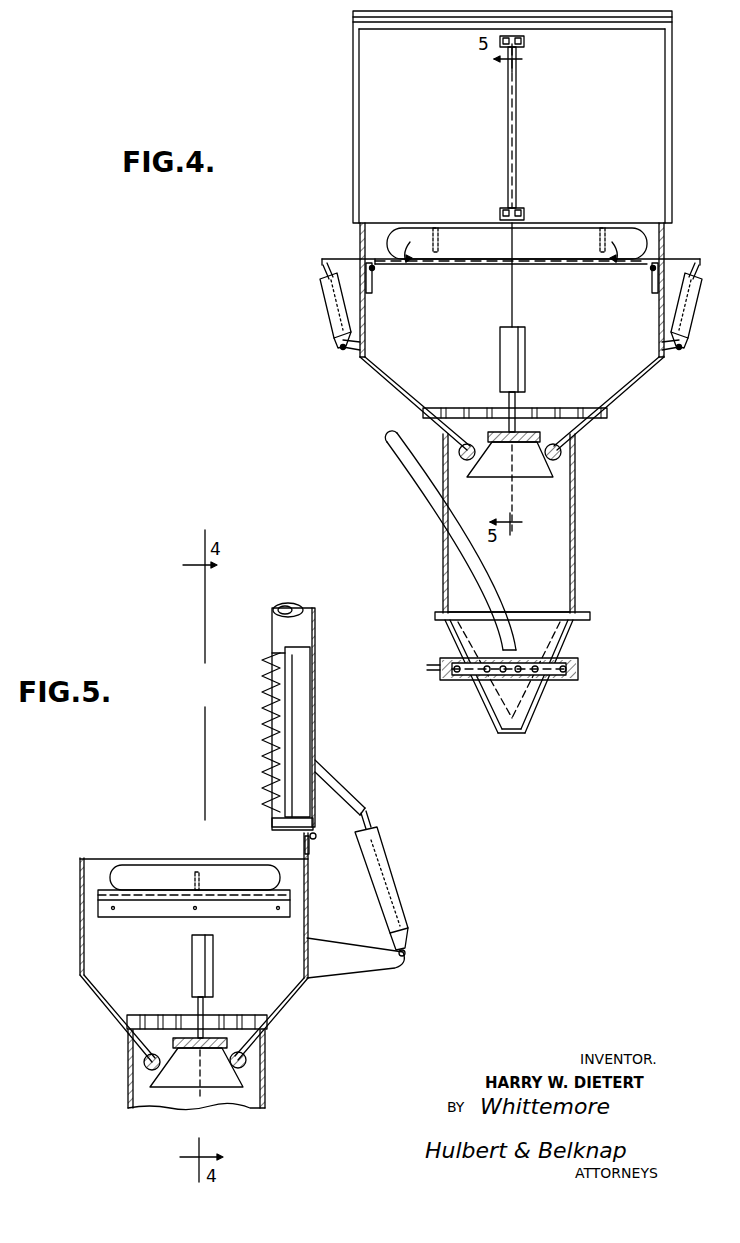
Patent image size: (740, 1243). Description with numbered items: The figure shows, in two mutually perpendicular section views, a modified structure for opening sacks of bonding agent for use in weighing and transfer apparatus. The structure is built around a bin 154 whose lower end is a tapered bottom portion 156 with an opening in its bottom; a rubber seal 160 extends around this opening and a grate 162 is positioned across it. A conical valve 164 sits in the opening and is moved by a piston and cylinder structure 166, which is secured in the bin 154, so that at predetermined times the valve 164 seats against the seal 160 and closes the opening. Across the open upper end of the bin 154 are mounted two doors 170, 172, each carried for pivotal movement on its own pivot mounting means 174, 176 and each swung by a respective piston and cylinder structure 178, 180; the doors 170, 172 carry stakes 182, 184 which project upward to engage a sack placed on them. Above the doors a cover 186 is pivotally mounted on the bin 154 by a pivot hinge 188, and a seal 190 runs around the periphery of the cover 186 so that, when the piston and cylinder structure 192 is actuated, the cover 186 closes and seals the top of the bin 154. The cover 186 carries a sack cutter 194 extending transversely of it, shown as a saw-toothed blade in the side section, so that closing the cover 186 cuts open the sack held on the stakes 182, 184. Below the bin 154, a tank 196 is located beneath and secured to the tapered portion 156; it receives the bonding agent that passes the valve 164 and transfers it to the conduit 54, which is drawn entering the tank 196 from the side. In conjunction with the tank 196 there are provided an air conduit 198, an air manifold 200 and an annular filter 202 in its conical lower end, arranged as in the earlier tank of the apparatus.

In FIG. 4, the conduit 54 is at (412, 478).
In FIG. 4, the bin 154 is at (368, 324).
In FIG. 5, the bin 154 is at (194, 947).
In FIG. 4, the tapered bottom portion 156 is at (386, 380).
In FIG. 4, the rubber seal 160 is at (462, 470).
In FIG. 5, the rubber seal 160 is at (195, 1061).
In FIG. 4, the grate 162 is at (468, 406).
In FIG. 5, the grate 162 is at (162, 1015).
In FIG. 4, the conical valve 164 is at (522, 476).
In FIG. 5, the conical valve 164 is at (190, 1088).
In FIG. 4, the piston and cylinder structure 166 is at (526, 372).
In FIG. 5, the piston and cylinder structure 166 is at (215, 976).
In FIG. 4, the door 170 is at (442, 258).
In FIG. 5, the door 170 is at (162, 889).
In FIG. 4, the door 172 is at (535, 262).
In FIG. 4, the pivot mounting means 174 is at (375, 270).
In FIG. 5, the pivot mounting means 174 is at (133, 905).
In FIG. 4, the pivot mounting means 176 is at (650, 270).
In FIG. 4, the piston and cylinder structure 178 is at (322, 308).
In FIG. 4, the piston and cylinder structure 180 is at (675, 310).
In FIG. 4, the stake 182 is at (437, 230).
In FIG. 4, the stake 184 is at (598, 232).
In FIG. 4, the cover 186 is at (430, 137).
In FIG. 5, the cover 186 is at (316, 730).
In FIG. 5, the pivot hinge 188 is at (316, 840).
In FIG. 4, the seal 190 is at (396, 28).
In FIG. 5, the seal 190 is at (273, 607).
In FIG. 5, the piston and cylinder structure 192 is at (393, 872).
In FIG. 4, the sack cutter 194 is at (514, 150).
In FIG. 5, the sack cutter 194 is at (268, 754).
In FIG. 4, the tank 196 is at (578, 548).
In FIG. 5, the tank 196 is at (266, 1088).
In FIG. 4, the air conduit 198 is at (432, 672).
In FIG. 4, the air manifold 200 is at (566, 682).
In FIG. 4, the annular filter 202 is at (562, 648).